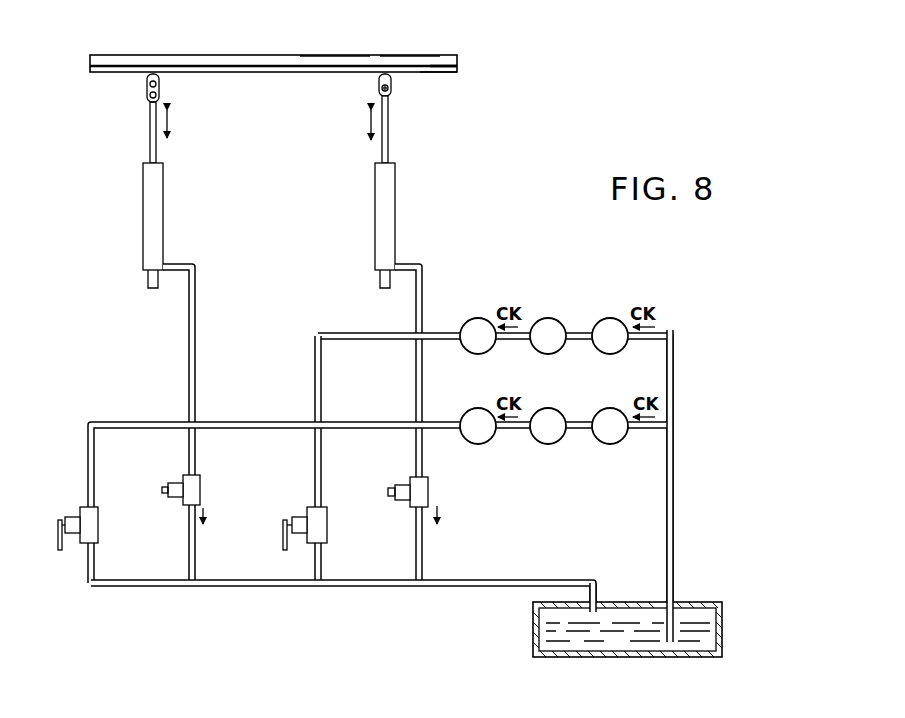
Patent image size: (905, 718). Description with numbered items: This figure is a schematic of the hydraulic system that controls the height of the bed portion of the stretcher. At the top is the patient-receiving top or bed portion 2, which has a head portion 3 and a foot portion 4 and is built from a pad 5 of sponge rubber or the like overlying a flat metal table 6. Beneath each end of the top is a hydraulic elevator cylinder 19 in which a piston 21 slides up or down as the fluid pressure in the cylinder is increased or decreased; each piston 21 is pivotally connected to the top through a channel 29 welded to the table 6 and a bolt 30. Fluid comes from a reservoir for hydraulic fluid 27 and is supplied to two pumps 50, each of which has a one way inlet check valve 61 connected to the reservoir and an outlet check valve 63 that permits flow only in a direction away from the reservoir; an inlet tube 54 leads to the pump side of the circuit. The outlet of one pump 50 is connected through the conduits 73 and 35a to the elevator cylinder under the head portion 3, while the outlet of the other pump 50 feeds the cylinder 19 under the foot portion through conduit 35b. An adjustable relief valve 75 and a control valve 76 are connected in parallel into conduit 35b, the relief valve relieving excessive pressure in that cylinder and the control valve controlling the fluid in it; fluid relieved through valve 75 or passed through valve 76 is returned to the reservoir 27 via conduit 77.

The top or bed portion 2 is at (370, 56).
The head portion 3 is at (100, 60).
The foot portion 4 is at (433, 62).
The pad 5 is at (440, 66).
The table 6 is at (458, 72).
The hydraulic elevator cylinder 19 is at (162, 216).
The piston 21 is at (150, 124).
The reservoir for hydraulic fluid 27 is at (713, 628).
The channel 29 is at (392, 86).
The bolt 30 is at (379, 86).
The conduit 35a is at (196, 311).
The conduit 35b is at (423, 270).
The hydraulic pump 50 is at (550, 318).
The inlet tube 54 is at (674, 478).
The one way inlet check valve 61 is at (611, 318).
The outlet check valve 63 is at (478, 318).
The conduit 73 is at (443, 333).
The adjustable relief valve 75 is at (200, 478).
The control valve 76 is at (98, 526).
The conduit 77 is at (478, 560).